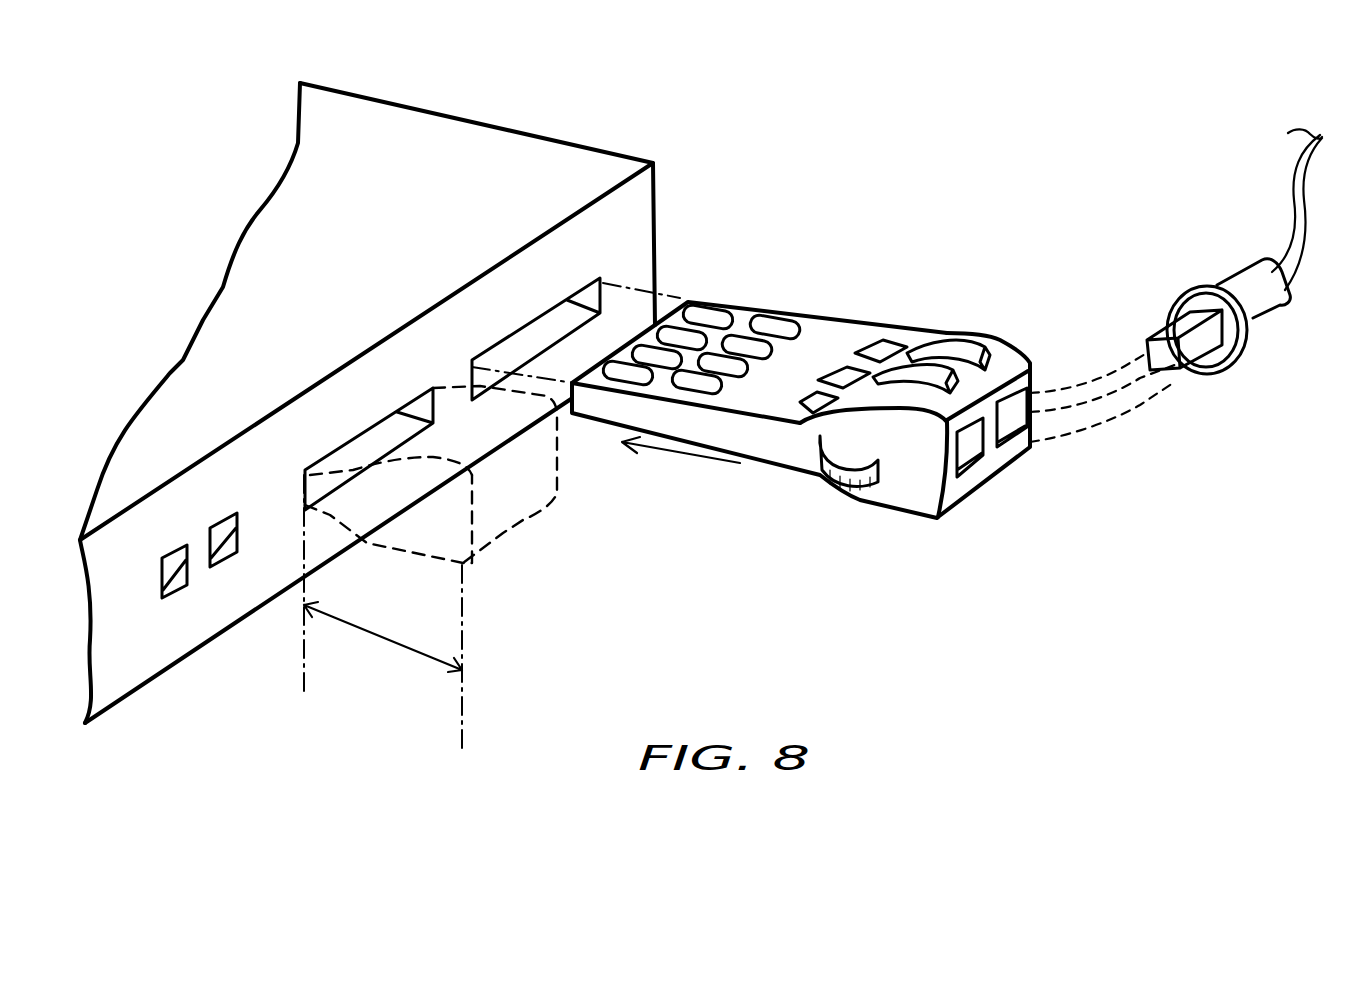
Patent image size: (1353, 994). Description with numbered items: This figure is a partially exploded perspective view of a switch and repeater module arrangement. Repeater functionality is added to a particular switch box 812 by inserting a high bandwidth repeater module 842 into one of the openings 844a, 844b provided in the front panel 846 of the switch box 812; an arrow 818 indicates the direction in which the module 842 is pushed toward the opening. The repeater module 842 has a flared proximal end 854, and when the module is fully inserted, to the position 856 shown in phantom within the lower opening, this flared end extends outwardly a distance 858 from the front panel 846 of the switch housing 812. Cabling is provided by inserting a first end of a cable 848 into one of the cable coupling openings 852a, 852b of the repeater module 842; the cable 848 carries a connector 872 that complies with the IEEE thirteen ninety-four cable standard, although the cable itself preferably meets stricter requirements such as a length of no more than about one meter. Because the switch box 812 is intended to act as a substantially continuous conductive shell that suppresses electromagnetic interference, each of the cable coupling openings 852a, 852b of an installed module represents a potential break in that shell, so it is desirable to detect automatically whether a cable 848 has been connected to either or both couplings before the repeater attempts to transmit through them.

The switch box 812 is at (487, 120).
The front panel 846 is at (640, 207).
The opening 844a is at (517, 333).
The opening 844b is at (367, 430).
The high bandwidth repeater module 842 is at (810, 318).
The cable 848 is at (1297, 240).
The cable coupling opening 852a is at (1013, 390).
The cable coupling opening 852b is at (965, 467).
The flared proximal end 854 is at (913, 483).
The fully inserted position 856 is at (503, 533).
The distance 858 is at (410, 650).
The insertion direction arrow 818 is at (697, 460).
The connector 872 is at (1207, 372).